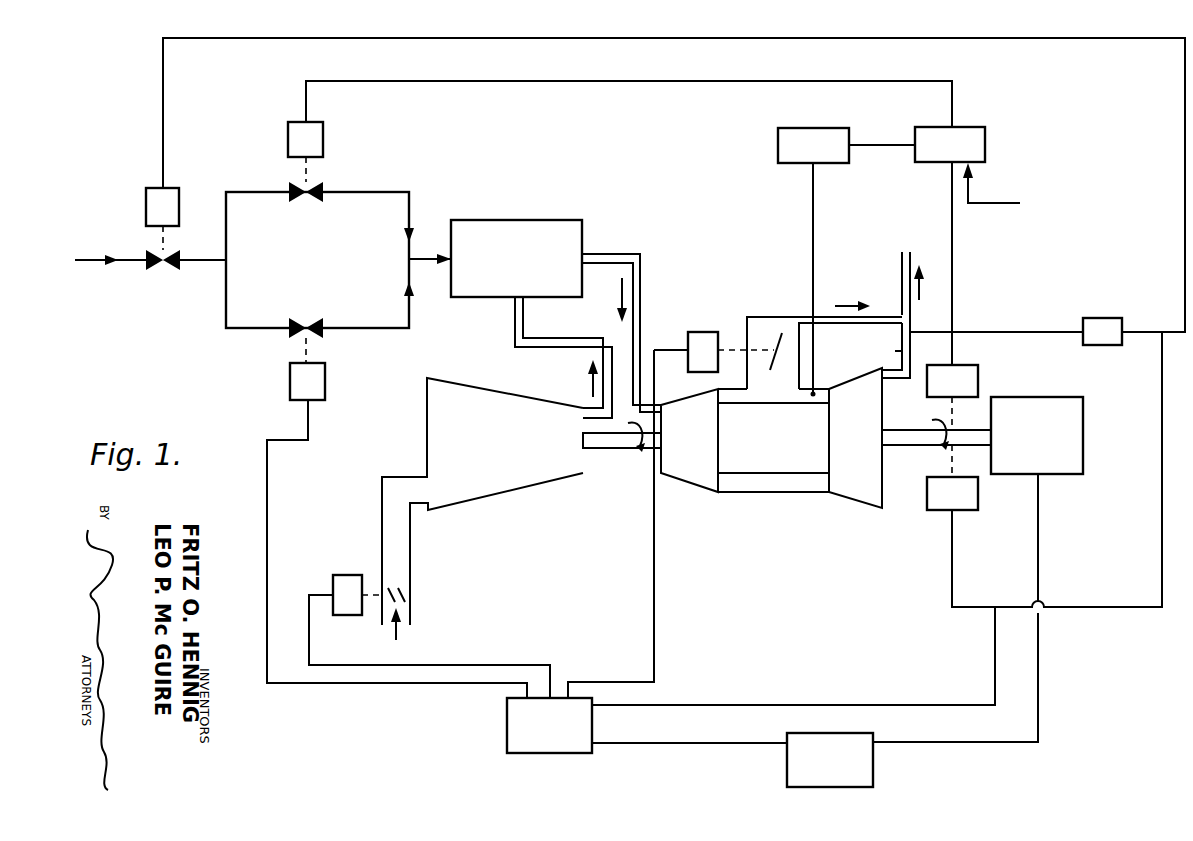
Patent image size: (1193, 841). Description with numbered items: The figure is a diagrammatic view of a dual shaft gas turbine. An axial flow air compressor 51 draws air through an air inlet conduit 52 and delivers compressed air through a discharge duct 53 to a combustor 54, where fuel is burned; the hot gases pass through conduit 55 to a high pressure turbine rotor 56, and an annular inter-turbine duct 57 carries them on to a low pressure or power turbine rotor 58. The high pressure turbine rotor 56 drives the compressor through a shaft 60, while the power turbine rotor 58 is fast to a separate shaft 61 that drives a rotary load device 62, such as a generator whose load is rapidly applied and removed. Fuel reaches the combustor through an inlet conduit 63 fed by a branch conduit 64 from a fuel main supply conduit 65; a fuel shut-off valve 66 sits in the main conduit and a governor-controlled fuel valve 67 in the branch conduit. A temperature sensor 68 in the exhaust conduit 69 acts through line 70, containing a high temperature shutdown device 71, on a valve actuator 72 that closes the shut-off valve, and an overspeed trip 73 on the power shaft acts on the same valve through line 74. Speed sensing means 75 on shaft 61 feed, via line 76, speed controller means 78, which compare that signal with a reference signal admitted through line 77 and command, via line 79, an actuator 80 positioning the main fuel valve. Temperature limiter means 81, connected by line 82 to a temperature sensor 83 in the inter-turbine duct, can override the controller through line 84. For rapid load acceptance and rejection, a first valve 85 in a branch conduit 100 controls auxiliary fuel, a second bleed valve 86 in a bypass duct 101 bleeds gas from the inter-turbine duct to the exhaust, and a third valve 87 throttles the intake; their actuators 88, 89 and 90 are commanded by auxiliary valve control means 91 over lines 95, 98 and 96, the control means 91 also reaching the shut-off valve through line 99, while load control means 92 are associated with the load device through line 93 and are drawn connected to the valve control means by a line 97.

The axial flow air compressor 51 is at (501, 366).
The air inlet conduit 52 is at (382, 505).
The compressed air outlet conduit 53 is at (556, 345).
The combustor 54 is at (544, 206).
The conduit 55 is at (644, 272).
The high pressure turbine rotor 56 is at (692, 477).
The inter-turbine duct 57 is at (775, 493).
The low pressure turbine rotor 58 is at (858, 495).
The shaft 60 is at (626, 449).
The shaft 61 is at (922, 447).
The rotary load device 62 is at (1083, 445).
The inlet conduit 63 is at (424, 258).
The branch conduit 64 is at (406, 193).
The fuel main supply conduit 65 is at (83, 259).
The fuel shut-off valve 66 is at (180, 259).
The governor-controlled fuel valve 67 is at (324, 188).
The temperature sensor 68 is at (906, 334).
The exhaust conduit 69 is at (900, 351).
The line 70 is at (305, 18).
The high temperature shutdown device 71 is at (1110, 340).
The valve actuator 72 is at (148, 190).
The overspeed trip means 73 is at (970, 503).
The line 74 is at (960, 607).
The speed sensing means 75 is at (965, 368).
The line 76 is at (952, 243).
The line 77 is at (1004, 183).
The speed controller means 78 is at (976, 127).
The line 79 is at (648, 62).
The actuator 80 is at (323, 132).
The temperature limiter means 81 is at (842, 113).
The line 82 is at (813, 224).
The temperature sensor 83 is at (814, 392).
The line 84 is at (890, 145).
The first valve 85 is at (324, 336).
The second valve 86 is at (776, 354).
The third valve 87 is at (396, 586).
The actuator means 88 is at (325, 387).
The actuator means 89 is at (688, 366).
The actuator means 90 is at (333, 590).
The auxiliary valve control means 91 is at (507, 734).
The load control means 92 is at (787, 771).
The line 93 is at (1038, 707).
The line 95 is at (283, 690).
The line 96 is at (498, 663).
The load control connection line 97 is at (694, 728).
The line 98 is at (654, 600).
The line 99 is at (784, 704).
The branch conduit 100 is at (405, 328).
The bypass duct 101 is at (802, 316).